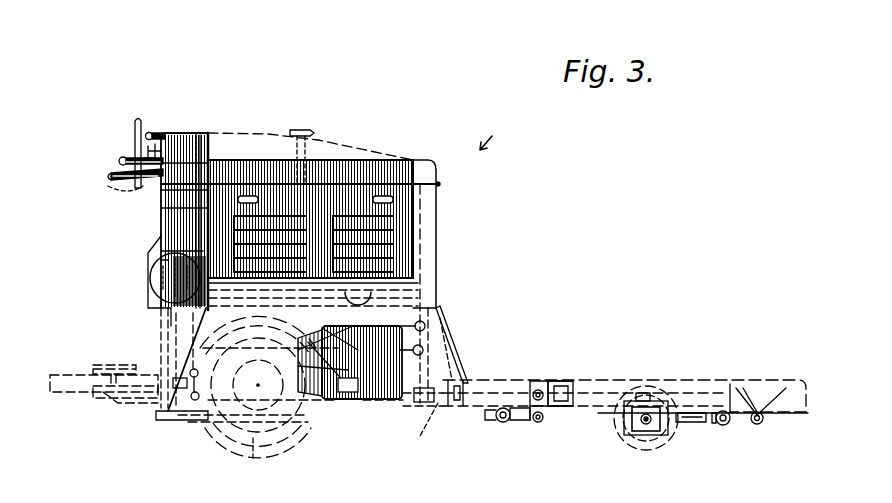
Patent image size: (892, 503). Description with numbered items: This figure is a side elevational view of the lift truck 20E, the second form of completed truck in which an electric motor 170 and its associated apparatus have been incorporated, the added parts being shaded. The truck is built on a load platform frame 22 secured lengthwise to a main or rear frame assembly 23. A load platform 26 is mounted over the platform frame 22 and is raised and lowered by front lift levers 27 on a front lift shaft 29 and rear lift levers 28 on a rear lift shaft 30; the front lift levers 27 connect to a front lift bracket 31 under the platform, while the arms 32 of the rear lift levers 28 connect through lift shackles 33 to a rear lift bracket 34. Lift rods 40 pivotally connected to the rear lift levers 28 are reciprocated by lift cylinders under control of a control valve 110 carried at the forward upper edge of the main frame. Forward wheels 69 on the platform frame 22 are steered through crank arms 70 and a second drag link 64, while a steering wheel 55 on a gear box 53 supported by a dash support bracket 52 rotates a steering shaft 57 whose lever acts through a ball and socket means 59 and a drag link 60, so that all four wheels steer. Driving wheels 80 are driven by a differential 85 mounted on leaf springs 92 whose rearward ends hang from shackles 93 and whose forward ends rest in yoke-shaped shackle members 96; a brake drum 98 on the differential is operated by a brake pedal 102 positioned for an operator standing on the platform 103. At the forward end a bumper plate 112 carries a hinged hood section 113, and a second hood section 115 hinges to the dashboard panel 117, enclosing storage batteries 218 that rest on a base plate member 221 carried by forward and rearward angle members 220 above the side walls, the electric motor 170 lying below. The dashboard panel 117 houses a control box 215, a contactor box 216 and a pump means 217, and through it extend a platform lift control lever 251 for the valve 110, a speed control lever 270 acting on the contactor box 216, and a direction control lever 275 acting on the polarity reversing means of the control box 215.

The lift truck 20E is at (496, 129).
The contactor box 216 is at (158, 208).
The control box 215 is at (152, 189).
The storage batteries 218 is at (365, 165).
The hood section 113 is at (343, 139).
The second hood section 115 is at (240, 125).
The dashboard panel 117 is at (176, 126).
The bumper plate 112 is at (429, 197).
The base plate member 221 is at (405, 268).
The forward and rearward angle members 220 is at (355, 290).
The load platform frame 22 is at (405, 300).
The control valve 110 is at (432, 308).
The electric motor 170 is at (445, 330).
The lift rods 40 is at (455, 388).
The yoke-shaped shackle members 96 is at (330, 398).
The differential 85 is at (302, 394).
The leaf springs 92 is at (240, 404).
The driving wheels 80 is at (264, 455).
The platform 103 is at (55, 366).
The brake pedal 102 is at (105, 357).
The brake drum 98 is at (155, 332).
The ball and socket means 59 is at (146, 414).
The drag link 60 is at (183, 405).
The shackles 93 is at (162, 412).
The pump means 217 is at (150, 268).
The dash support bracket 52 is at (150, 243).
The steering shaft 57 is at (150, 253).
The platform lift control lever 251 is at (112, 152).
The speed control lever 270 is at (102, 168).
The steering wheel 55 is at (129, 112).
The gear box 53 is at (138, 145).
The direction control lever 275 is at (143, 124).
The load platform 26 is at (634, 372).
The main or rear frame assembly 23 is at (423, 422).
The second drag link 64 is at (385, 400).
The rear lift shaft 30 is at (492, 415).
The rear lift levers 28 is at (512, 412).
The arms 32 is at (530, 405).
The lift shackles 33 is at (538, 395).
The rear lift bracket 34 is at (563, 372).
The forward wheels 69 is at (620, 436).
The crank arms 70 is at (680, 416).
The front lift shaft 29 is at (714, 418).
The front lift levers 27 is at (745, 418).
The front lift bracket 31 is at (752, 396).